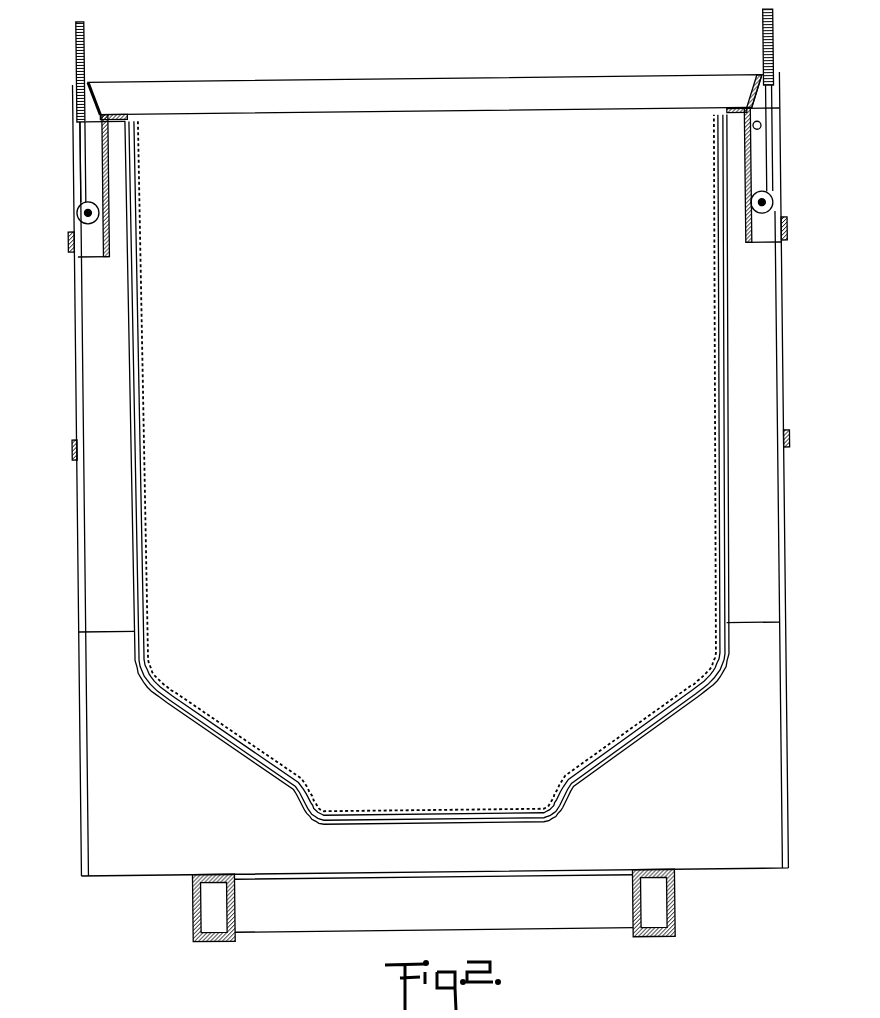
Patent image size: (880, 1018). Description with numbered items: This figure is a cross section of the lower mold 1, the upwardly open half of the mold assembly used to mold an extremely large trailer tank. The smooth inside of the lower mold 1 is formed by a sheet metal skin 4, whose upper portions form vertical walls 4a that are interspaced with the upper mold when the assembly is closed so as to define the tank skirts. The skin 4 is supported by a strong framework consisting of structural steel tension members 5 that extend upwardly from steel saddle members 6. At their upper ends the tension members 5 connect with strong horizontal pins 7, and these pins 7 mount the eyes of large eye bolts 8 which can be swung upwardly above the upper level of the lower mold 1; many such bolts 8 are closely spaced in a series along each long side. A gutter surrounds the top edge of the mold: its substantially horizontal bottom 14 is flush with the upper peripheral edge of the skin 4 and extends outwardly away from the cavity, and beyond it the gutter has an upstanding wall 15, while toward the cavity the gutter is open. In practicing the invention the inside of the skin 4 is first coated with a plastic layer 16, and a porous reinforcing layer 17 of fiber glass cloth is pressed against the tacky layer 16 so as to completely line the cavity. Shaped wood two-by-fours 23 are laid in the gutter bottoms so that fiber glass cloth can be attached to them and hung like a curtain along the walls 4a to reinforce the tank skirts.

The lower mold 1 is at (147, 877).
The sheet metal skin 4 is at (140, 459).
The vertical wall 4a is at (129, 296).
The tension members 5 is at (99, 572).
The saddle members 6 is at (102, 769).
The horizontal pins 7 is at (100, 209).
The eye bolts 8 is at (82, 24).
The gutter bottom 14 is at (742, 109).
The upstanding wall 15 is at (94, 95).
The plastic layer 16 is at (140, 327).
The porous reinforcing layer 17 is at (140, 370).
The wood two-by-fours 23 is at (117, 106).